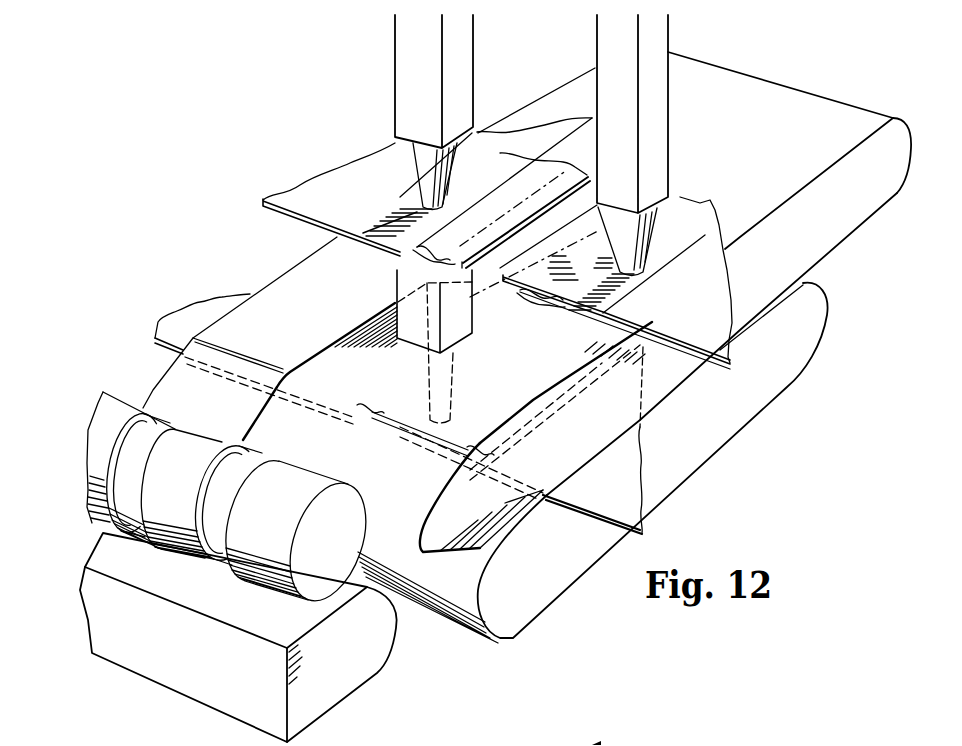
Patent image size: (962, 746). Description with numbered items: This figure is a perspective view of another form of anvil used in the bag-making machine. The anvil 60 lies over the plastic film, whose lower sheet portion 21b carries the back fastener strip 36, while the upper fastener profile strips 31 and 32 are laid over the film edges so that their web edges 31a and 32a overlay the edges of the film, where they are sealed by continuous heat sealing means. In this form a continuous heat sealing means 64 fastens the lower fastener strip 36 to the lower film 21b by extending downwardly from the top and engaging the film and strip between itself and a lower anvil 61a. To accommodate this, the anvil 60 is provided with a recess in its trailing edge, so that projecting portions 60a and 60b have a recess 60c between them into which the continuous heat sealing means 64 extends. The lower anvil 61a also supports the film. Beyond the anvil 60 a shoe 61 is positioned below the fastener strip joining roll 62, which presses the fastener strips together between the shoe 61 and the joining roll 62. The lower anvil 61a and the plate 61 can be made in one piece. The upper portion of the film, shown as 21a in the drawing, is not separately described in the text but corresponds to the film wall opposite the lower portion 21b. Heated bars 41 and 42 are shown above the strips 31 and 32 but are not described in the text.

The first web portion 21a is at (720, 293).
The lower sheet portion of the film 21b is at (588, 505).
The upper fastener profile strip 31 is at (687, 227).
The web edge of fastener strip 31a is at (623, 287).
The upper fastener profile strip 32 is at (520, 180).
The web edge of fastener strip 32a is at (400, 225).
The back fastener strip 36 is at (394, 440).
The first heated bar 41 is at (660, 33).
The second heated bar 42 is at (462, 43).
The anvil 60 is at (832, 243).
The projecting portion of anvil 60a is at (438, 478).
The projecting portion of anvil 60b is at (243, 312).
The recess 60c is at (303, 383).
The shoe 61 is at (360, 667).
The lower anvil 61a is at (552, 590).
The fastener strip joining roll 62 is at (353, 550).
The continuous heat sealing means 64 is at (397, 285).